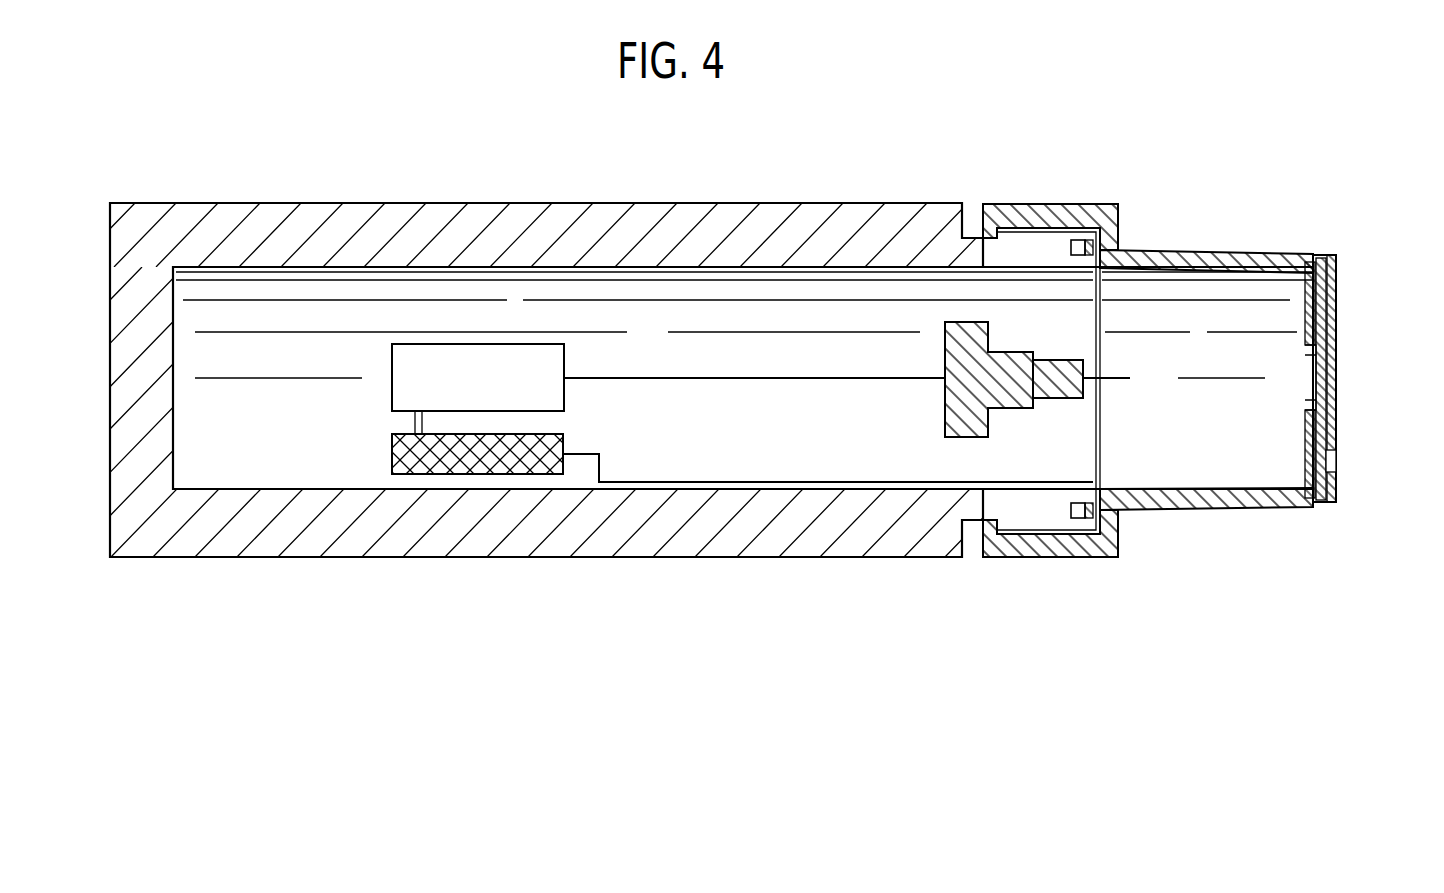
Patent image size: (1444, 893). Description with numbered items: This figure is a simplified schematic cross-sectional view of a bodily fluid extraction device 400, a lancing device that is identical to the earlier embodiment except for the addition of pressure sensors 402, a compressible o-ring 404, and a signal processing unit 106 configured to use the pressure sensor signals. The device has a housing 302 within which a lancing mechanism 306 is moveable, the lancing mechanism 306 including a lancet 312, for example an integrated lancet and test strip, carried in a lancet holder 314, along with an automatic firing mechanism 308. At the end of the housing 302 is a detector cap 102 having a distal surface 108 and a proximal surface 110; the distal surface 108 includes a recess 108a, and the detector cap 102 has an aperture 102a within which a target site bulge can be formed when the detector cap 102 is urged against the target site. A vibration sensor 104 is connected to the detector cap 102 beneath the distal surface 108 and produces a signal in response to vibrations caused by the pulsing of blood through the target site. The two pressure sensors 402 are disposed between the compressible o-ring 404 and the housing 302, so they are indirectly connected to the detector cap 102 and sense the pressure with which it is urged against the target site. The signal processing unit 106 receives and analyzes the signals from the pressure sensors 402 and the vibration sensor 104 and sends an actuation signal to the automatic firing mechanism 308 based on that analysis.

The bodily fluid extraction device 400 is at (849, 116).
The housing 302 is at (440, 203).
The lancing mechanism 306 is at (719, 414).
The automatic firing mechanism 308 is at (412, 383).
The signal processing unit 106 is at (392, 452).
The lancet holder 314 is at (968, 378).
The lancet 312 is at (1083, 390).
The compressible o-ring 404 is at (1120, 532).
The pressure sensors 402 is at (1077, 240).
The detector cap 102 is at (1217, 238).
The vibration sensor 104 is at (1337, 266).
The distal surface 108 is at (1337, 312).
The proximal surface 110 is at (1303, 423).
The aperture 102a is at (1322, 383).
The recess 108a is at (1337, 460).